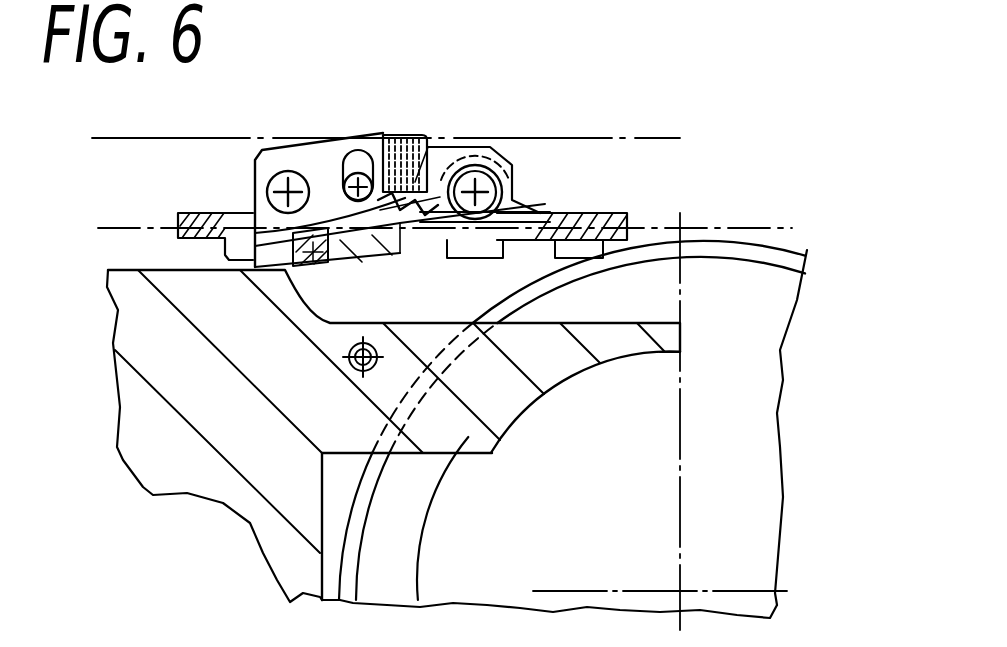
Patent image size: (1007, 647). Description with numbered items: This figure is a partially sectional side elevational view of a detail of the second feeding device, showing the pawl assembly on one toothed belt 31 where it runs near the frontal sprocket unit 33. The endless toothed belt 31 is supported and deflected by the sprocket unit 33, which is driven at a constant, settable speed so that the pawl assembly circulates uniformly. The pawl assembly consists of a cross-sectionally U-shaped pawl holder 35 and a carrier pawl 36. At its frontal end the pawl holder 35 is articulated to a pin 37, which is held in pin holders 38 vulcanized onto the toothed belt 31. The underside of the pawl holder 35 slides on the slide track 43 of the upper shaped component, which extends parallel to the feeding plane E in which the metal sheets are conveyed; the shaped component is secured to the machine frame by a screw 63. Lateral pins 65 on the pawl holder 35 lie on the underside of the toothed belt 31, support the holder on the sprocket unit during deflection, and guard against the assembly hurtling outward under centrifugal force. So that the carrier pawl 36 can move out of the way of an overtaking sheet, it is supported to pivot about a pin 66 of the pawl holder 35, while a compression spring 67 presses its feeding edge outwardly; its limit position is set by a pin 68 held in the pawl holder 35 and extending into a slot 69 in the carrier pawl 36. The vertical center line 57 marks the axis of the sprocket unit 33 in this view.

The feeding plane E is at (640, 138).
The toothed belt 31 is at (622, 216).
The frontal sprocket unit 33 is at (612, 526).
The pawl holder 35 is at (383, 256).
The carrier pawl 36 is at (430, 134).
The pin 37 is at (497, 163).
The pin holder 38 is at (527, 194).
The slide track 43 is at (125, 270).
The axis 57 is at (682, 591).
The screw 63 is at (353, 367).
The lateral pin 65 is at (322, 270).
The pin 66 is at (265, 186).
The compression spring 67 is at (412, 244).
The pin 68 is at (340, 177).
The slot 69 is at (353, 150).